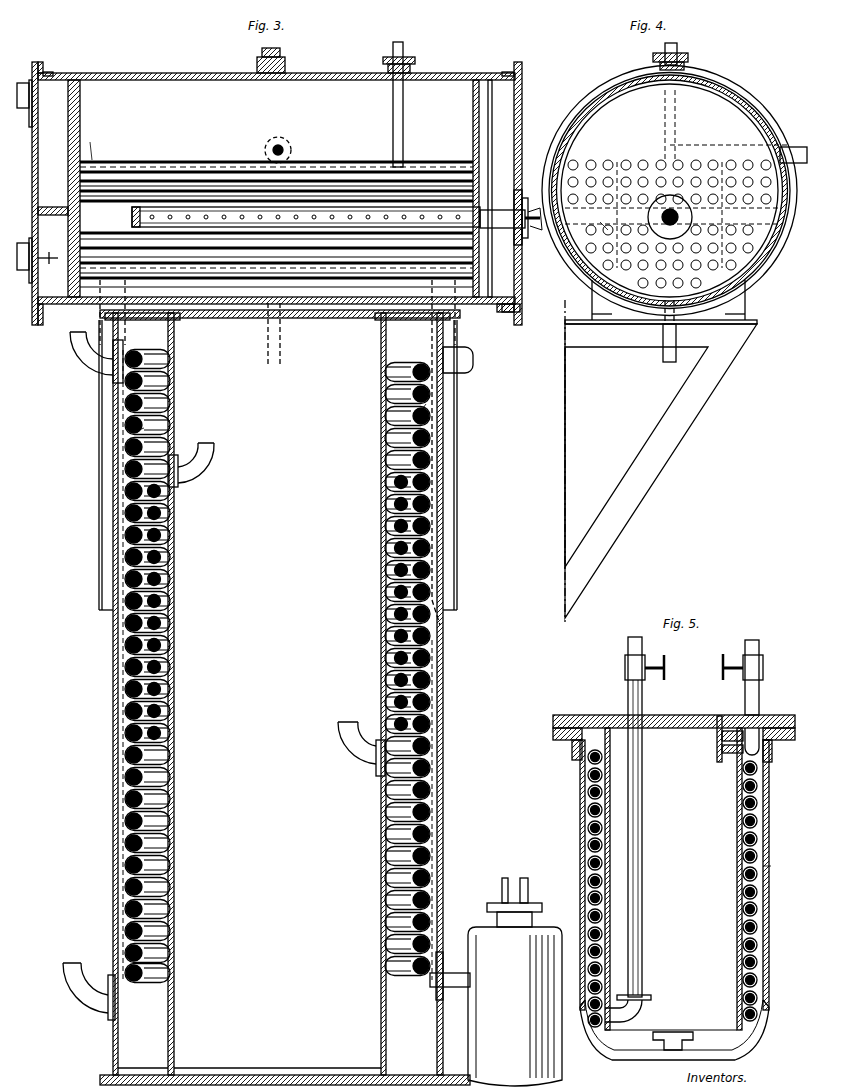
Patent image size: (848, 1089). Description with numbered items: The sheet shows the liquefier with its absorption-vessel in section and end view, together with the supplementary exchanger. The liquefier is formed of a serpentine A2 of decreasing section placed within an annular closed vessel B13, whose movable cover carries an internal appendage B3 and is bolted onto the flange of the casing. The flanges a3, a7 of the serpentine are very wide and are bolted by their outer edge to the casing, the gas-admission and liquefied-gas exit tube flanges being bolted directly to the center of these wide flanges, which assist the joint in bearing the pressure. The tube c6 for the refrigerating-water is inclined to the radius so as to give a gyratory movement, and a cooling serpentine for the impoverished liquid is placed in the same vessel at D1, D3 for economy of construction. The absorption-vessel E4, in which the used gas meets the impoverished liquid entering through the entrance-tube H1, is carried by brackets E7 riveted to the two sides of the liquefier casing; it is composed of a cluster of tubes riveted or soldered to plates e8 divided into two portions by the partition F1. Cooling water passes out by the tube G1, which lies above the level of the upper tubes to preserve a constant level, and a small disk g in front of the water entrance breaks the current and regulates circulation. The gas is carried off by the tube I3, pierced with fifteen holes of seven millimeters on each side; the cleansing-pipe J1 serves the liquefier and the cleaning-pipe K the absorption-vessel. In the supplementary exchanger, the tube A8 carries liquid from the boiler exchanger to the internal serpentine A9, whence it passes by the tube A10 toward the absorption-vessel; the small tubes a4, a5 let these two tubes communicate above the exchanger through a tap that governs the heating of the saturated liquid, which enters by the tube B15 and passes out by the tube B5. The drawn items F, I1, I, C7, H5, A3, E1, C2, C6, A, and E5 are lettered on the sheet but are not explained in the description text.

In FIG. 3, the absorption-vessel E4 is at (277, 186).
In FIG. 3, the header partition plate F is at (53, 202).
In FIG. 3, the water exit tube G1 is at (32, 181).
In FIG. 3, the small disk g is at (50, 260).
In FIG. 3, the cleaning-pipe K is at (402, 103).
In FIG. 4, the cleaning-pipe K is at (673, 54).
In FIG. 3, the central tube I1 is at (279, 150).
In FIG. 4, the central tube I1 is at (670, 217).
In FIG. 3, the heating tubes I is at (276, 218).
In FIG. 4, the heating tubes I is at (677, 189).
In FIG. 3, the refrigerating-water tube c6 is at (237, 220).
In FIG. 3, the plates e8 is at (277, 144).
In FIG. 3, the perforated distributing pipe C7 is at (306, 217).
In FIG. 3, the gas-discharge tube I3 is at (498, 217).
In FIG. 3, the entrance-tube for the impoverished liquid H1 is at (279, 334).
In FIG. 4, the entrance-tube for the impoverished liquid H1 is at (660, 332).
In FIG. 3, the annular closed vessel B13 is at (284, 699).
In FIG. 3, the internal appendage B3 is at (277, 666).
In FIG. 3, the serpentine A2 is at (147, 659).
In FIG. 3, the coil connection H5 is at (402, 458).
In FIG. 3, the lower coil connection A3 is at (429, 918).
In FIG. 3, the left jacket E1 is at (106, 465).
In FIG. 3, the brackets E7 is at (459, 465).
In FIG. 4, the brackets E7 is at (661, 451).
In FIG. 3, the serpentine flange a3 is at (104, 357).
In FIG. 3, the cooling serpentine D1 is at (191, 465).
In FIG. 3, the cooling serpentine D3 is at (361, 749).
In FIG. 3, the lower left elbow pipe C2 is at (89, 991).
In FIG. 3, the right fitting C6 is at (458, 360).
In FIG. 3, the serpentine flange a7 is at (444, 980).
In FIG. 3, the tank A is at (515, 982).
In FIG. 4, the drum shell rings E5 is at (669, 191).
In FIG. 4, the cleansing-pipe J1 is at (793, 145).
In FIG. 4, the partition F1 is at (670, 219).
In FIG. 5, the internal serpentine A9 is at (674, 887).
In FIG. 5, the tube A10 is at (633, 829).
In FIG. 5, the small tube a4 is at (645, 664).
In FIG. 5, the tube A8 is at (760, 696).
In FIG. 5, the small tube a5 is at (742, 664).
In FIG. 5, the exit tube B5 is at (721, 739).
In FIG. 5, the entrance tube B15 is at (673, 1034).